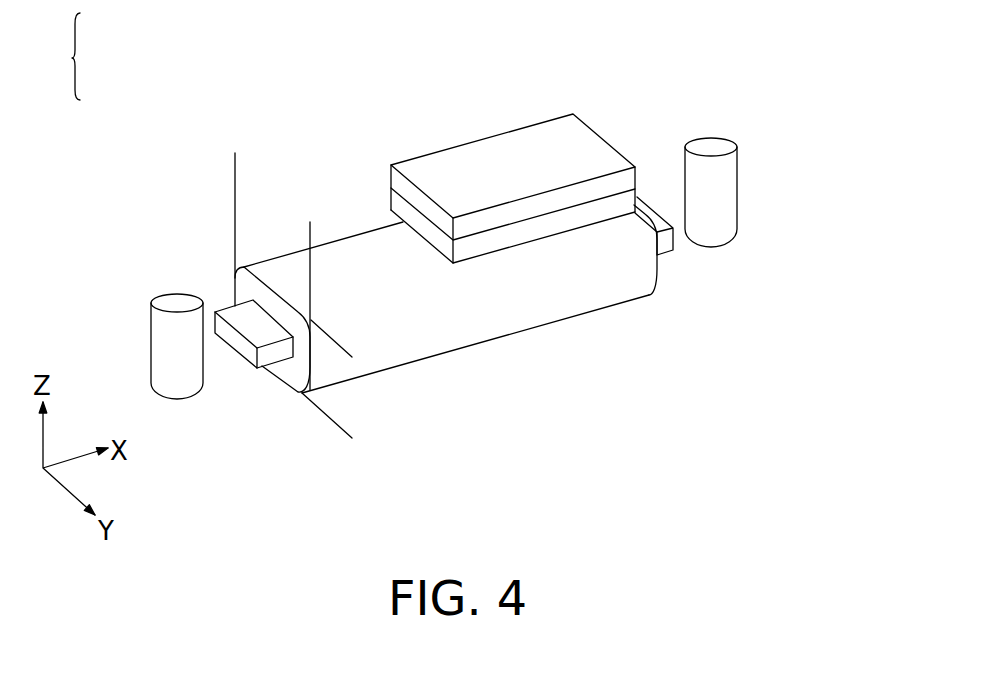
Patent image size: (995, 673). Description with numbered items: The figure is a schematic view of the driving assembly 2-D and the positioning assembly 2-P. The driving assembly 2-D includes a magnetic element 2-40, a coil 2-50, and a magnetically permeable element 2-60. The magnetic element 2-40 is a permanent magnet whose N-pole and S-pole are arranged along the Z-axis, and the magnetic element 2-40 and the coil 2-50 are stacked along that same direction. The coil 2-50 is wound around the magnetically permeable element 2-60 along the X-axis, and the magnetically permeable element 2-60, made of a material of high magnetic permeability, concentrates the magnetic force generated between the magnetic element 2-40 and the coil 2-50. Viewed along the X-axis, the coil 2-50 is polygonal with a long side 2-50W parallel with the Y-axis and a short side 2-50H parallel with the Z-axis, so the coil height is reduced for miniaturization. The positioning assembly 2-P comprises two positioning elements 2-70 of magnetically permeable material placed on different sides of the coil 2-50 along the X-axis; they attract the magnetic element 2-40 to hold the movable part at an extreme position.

The driving assembly 2-D is at (78, 57).
The magnetic element 2-40 is at (467, 156).
The coil 2-50 is at (478, 327).
The long side 2-50W is at (237, 162).
The short side 2-50H is at (346, 355).
The magnetically permeable element 2-60 is at (668, 242).
The positioning element 2-70 is at (177, 300).
The positioning assembly 2-P is at (797, 100).